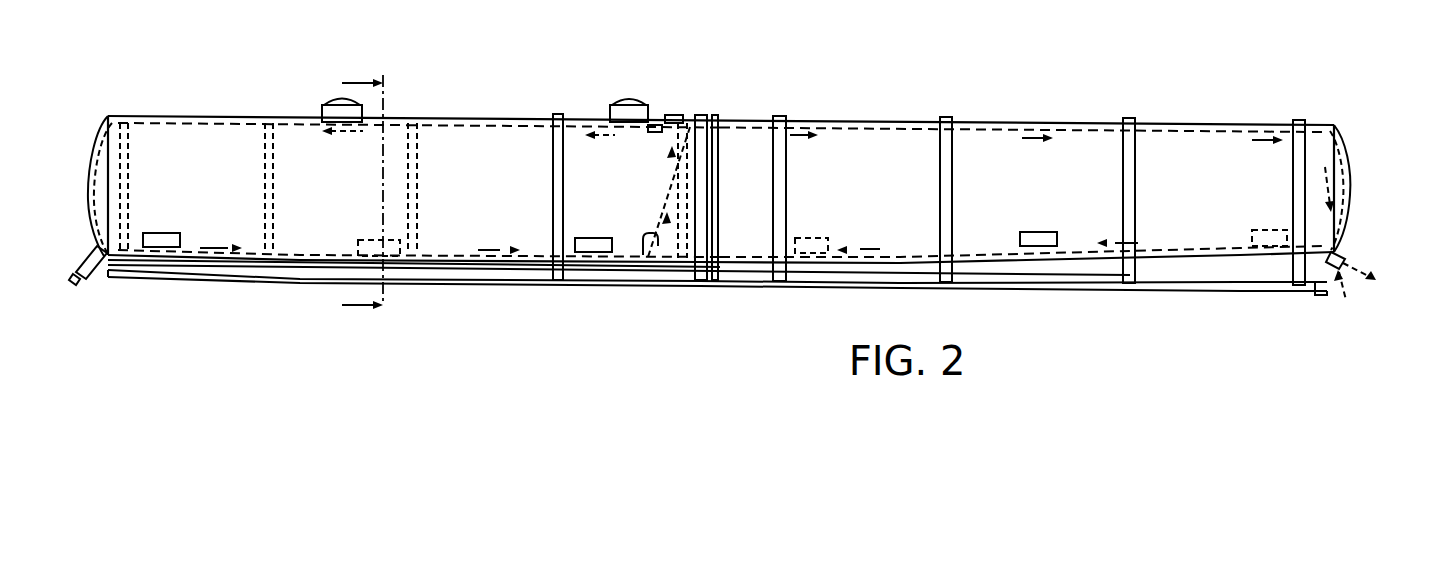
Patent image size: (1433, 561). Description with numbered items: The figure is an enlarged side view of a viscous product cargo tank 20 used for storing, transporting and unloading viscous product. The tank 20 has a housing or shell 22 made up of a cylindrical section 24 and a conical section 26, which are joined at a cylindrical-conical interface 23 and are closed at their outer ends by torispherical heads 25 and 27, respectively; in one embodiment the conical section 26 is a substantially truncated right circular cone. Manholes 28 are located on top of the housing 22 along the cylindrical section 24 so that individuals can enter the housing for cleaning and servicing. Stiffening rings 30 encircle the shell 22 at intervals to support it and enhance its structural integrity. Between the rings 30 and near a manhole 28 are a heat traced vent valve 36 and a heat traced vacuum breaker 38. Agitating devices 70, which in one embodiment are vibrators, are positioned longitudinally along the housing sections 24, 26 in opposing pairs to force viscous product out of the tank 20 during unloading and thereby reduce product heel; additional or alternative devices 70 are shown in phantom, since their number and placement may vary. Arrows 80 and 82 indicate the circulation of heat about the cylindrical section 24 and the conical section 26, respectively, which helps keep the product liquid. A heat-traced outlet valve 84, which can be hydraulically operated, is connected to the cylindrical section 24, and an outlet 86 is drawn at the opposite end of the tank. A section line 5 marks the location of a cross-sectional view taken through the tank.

The viscous product cargo tank 20 is at (920, 92).
The housing or shell 22 is at (1162, 121).
The cylindrical-conical interface 23 is at (700, 263).
The cylindrical section 24 is at (473, 198).
The torispherical head 25 is at (101, 133).
The conical section 26 is at (866, 198).
The torispherical head 27 is at (1350, 163).
The manholes 28 is at (322, 110).
The stiffening rings 30 is at (133, 282).
The heat traced vent valve 36 is at (680, 113).
The heat traced vacuum breaker 38 is at (655, 124).
The agitating devices 70 is at (165, 248).
The arrows 80 is at (112, 185).
The arrows 82 is at (787, 133).
The heat-traced outlet valve 84 is at (86, 285).
The outlet pipe 86 is at (1347, 257).
The section line 5- 5 is at (373, 198).